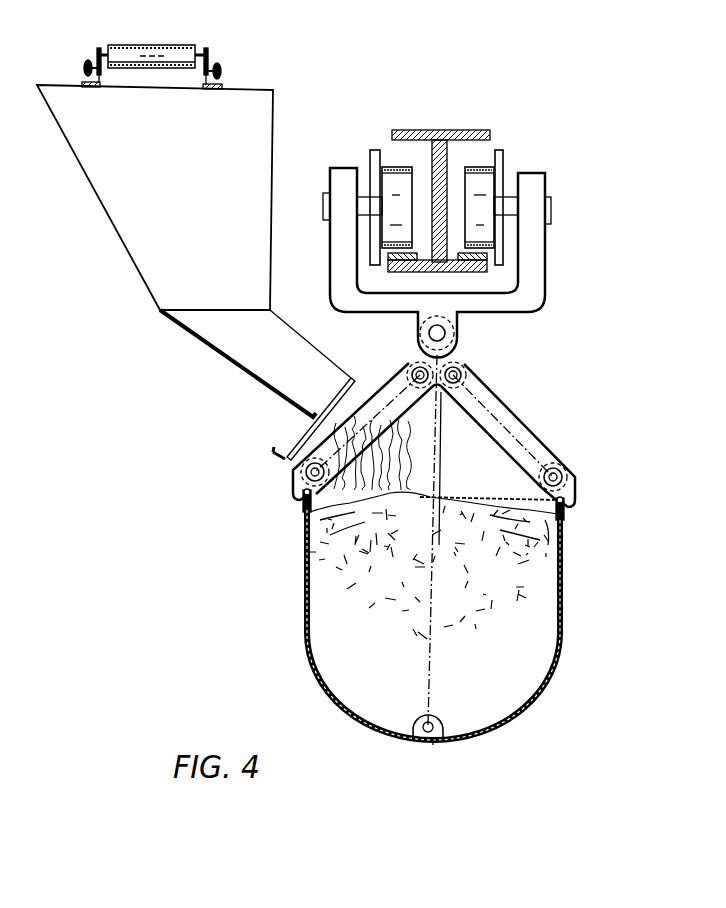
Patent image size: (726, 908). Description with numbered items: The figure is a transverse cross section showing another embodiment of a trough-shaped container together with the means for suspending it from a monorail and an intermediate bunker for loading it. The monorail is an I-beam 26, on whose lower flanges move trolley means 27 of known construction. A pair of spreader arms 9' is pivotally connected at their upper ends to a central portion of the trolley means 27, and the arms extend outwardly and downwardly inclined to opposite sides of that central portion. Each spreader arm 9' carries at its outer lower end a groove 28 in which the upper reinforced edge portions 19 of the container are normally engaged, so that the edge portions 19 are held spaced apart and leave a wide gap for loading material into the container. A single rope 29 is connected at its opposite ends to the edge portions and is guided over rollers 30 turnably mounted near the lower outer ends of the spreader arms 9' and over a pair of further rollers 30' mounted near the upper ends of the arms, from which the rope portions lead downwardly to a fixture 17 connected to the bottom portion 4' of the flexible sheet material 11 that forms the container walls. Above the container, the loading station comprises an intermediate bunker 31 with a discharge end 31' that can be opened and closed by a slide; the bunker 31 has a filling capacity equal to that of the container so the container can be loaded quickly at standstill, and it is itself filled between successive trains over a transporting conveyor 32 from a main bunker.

The transporting conveyor 32 is at (165, 50).
The intermediate bunker 31 is at (155, 197).
The discharge end 31' is at (257, 385).
The I-beam 26 is at (462, 133).
The trolley means 27 is at (527, 180).
The further rollers 30' is at (442, 364).
The spreader arms 9' is at (434, 540).
The rollers 30 is at (432, 465).
The groove 28 is at (292, 488).
The upper reinforced edge portions 19 is at (300, 505).
The rope 29 is at (440, 488).
The flexible sheet material 11 is at (563, 600).
The fixture 17 is at (440, 726).
The bottom portion 4' is at (443, 761).